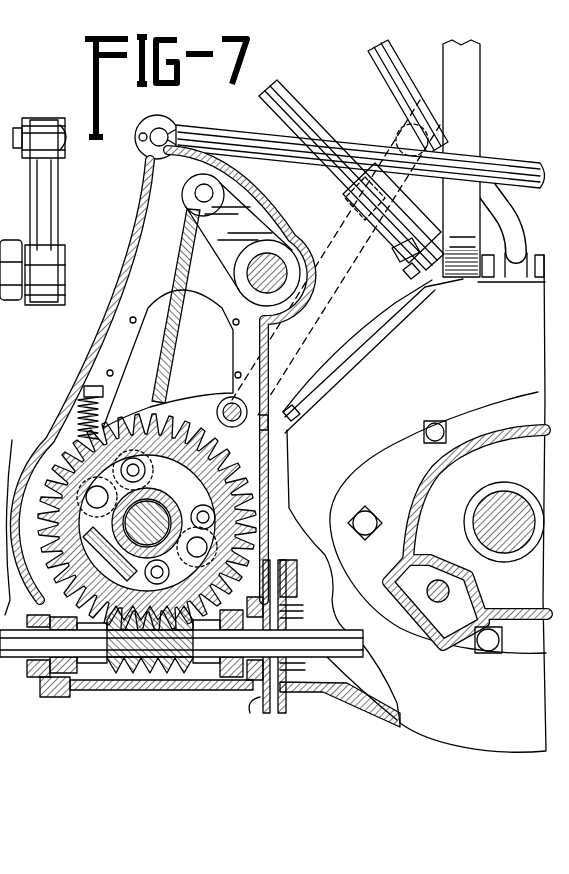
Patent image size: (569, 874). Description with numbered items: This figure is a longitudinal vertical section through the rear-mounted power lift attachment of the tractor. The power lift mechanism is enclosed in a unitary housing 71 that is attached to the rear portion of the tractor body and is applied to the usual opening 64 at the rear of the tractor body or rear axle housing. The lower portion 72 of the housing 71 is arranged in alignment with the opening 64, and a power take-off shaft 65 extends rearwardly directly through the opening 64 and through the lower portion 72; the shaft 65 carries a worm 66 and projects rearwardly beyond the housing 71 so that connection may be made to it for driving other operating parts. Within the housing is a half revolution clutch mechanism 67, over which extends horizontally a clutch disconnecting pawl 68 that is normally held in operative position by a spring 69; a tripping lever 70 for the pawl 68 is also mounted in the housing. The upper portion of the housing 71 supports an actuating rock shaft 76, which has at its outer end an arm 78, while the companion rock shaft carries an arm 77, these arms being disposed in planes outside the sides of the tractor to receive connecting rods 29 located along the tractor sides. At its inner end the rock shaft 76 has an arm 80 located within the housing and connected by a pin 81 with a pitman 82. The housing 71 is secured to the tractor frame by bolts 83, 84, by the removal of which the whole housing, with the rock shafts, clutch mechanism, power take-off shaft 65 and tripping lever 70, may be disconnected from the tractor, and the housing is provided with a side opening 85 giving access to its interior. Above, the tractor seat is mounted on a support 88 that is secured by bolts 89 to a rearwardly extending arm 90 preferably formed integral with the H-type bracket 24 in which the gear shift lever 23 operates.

The gear shift lever 23 is at (505, 214).
The H-type bracket 24 is at (483, 283).
The connecting rods 29 is at (228, 148).
The opening 64 is at (294, 604).
The power take-off shaft 65 is at (181, 660).
The worm 66 is at (161, 674).
The half revolution clutch mechanism 67 is at (191, 426).
The clutch disconnecting pawl 68 is at (210, 408).
The spring 69 is at (78, 415).
The tripping lever 70 is at (311, 283).
The housing 71 is at (126, 285).
The lower portion of the housing 72 is at (232, 688).
The actuating rock shaft 76 is at (281, 266).
The arm 77 is at (160, 163).
The arm 78 is at (42, 212).
The arm 80 is at (242, 216).
The pin 81 is at (222, 193).
The pitman 82 is at (190, 268).
The bolt 83 is at (263, 392).
The bolt 84 is at (246, 706).
The side opening 85 is at (144, 332).
The seat support 88 is at (306, 122).
The bolts 89 is at (393, 182).
The rearwardly extending arm 90 is at (385, 218).